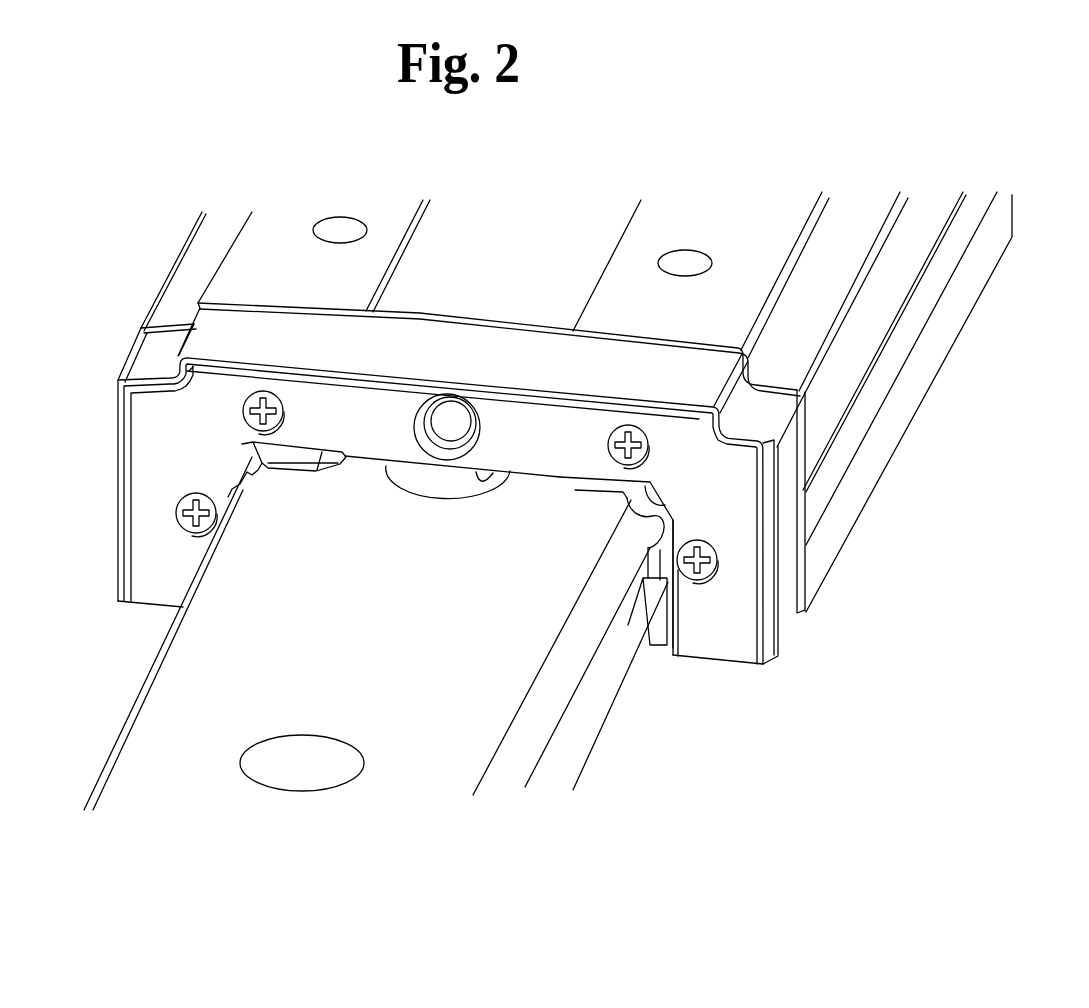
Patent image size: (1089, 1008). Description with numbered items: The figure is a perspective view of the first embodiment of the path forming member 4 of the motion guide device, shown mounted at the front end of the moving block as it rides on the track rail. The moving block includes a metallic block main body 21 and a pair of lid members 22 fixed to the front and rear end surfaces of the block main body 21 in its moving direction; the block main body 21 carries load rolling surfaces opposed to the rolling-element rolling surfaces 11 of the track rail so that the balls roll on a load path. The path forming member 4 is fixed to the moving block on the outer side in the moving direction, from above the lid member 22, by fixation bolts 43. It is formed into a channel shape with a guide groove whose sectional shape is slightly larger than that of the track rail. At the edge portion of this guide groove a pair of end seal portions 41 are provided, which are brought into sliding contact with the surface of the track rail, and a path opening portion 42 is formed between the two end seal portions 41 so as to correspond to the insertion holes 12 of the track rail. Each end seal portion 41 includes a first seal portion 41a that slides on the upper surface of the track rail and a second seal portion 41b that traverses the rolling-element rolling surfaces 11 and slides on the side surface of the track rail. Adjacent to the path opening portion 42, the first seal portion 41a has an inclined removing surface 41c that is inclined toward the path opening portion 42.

The path forming member 4 is at (741, 672).
The rolling-element rolling surface 11 is at (597, 775).
The insertion hole 12 is at (448, 498).
The block main body 21 is at (897, 414).
The lid member 22 is at (788, 615).
The end seal portion 41 is at (487, 531).
The first seal portion 41a is at (597, 483).
The second seal portion 41b is at (642, 626).
The inclined removing surface 41c is at (332, 457).
The path opening portion 42 is at (481, 478).
The fixation bolt 43 is at (246, 410).